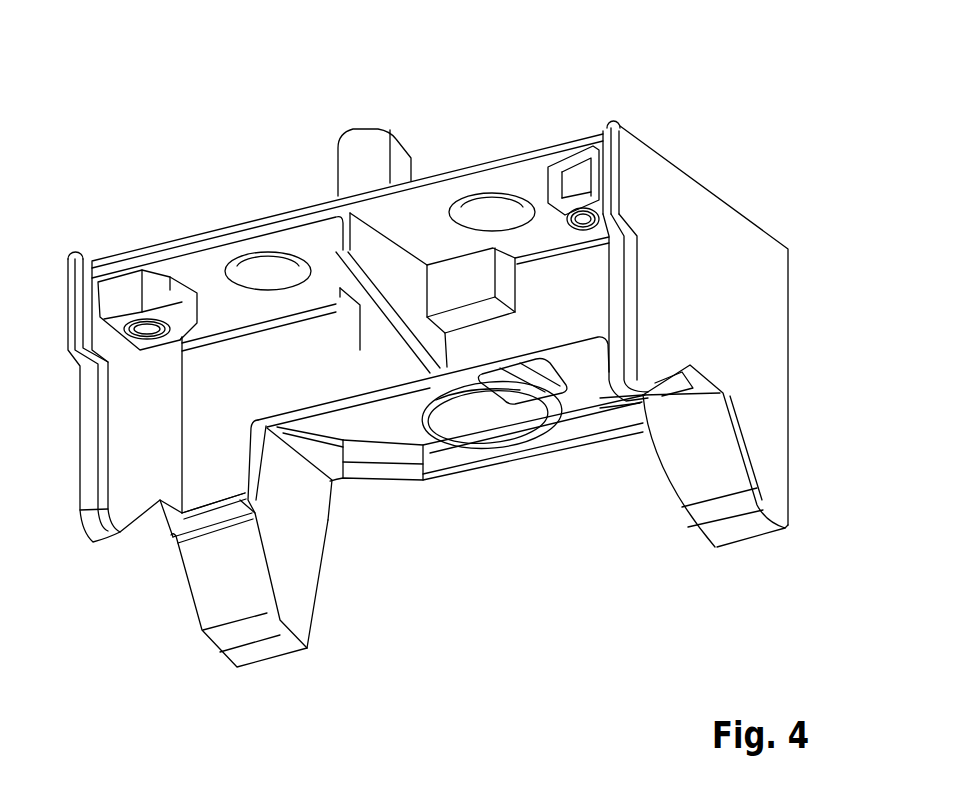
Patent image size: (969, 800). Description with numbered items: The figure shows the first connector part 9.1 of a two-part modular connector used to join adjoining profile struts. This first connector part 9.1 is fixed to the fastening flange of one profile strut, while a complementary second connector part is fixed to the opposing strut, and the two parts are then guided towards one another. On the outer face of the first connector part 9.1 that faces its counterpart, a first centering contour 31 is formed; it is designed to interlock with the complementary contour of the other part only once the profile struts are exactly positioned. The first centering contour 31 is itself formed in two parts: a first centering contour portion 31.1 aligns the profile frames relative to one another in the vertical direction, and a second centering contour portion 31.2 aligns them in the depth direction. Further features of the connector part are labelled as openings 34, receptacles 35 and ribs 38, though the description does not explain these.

The first connector part 9.1 is at (770, 96).
The first centering contour 31 is at (446, 523).
The first centering contour portion 31.1 is at (302, 548).
The second centering contour portion 31.2 is at (200, 575).
The opening 34 is at (500, 422).
The fastening receptacle 35 is at (123, 292).
The guide rib 38 is at (622, 298).